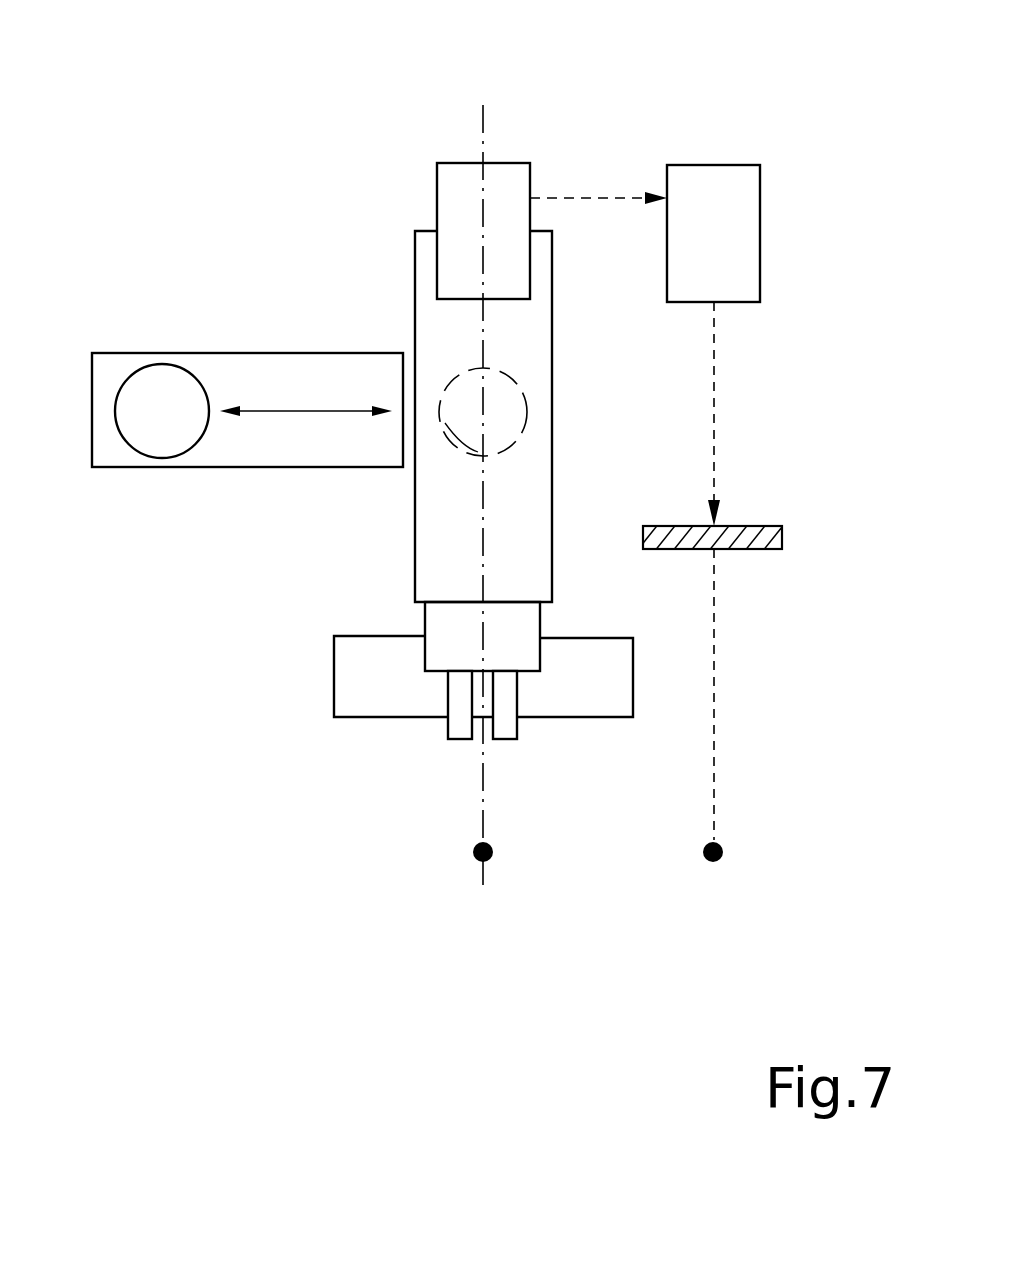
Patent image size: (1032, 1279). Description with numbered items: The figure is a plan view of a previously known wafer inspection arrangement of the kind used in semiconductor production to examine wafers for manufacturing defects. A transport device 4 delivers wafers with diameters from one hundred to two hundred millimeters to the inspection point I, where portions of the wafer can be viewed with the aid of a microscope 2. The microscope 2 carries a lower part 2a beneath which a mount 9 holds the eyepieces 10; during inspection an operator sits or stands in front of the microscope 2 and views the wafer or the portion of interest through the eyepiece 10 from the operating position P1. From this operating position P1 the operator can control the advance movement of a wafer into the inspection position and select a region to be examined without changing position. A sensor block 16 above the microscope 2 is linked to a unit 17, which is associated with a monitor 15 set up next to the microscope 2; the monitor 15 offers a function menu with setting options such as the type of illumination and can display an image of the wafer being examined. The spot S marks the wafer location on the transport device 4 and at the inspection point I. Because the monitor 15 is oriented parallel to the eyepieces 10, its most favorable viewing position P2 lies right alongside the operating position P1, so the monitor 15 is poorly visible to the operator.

The microscope 2 is at (478, 341).
The head extension 2a is at (527, 614).
The transport device 4 is at (263, 368).
The mount 9 is at (357, 657).
The eyepiece 10 is at (462, 715).
The monitor 15 is at (765, 540).
The sensor unit 16 is at (503, 183).
The evaluation unit 17 is at (740, 193).
The measuring spot S is at (162, 380).
The inspection point I is at (462, 432).
The operating position P1 is at (472, 852).
The viewing position P2 is at (725, 853).